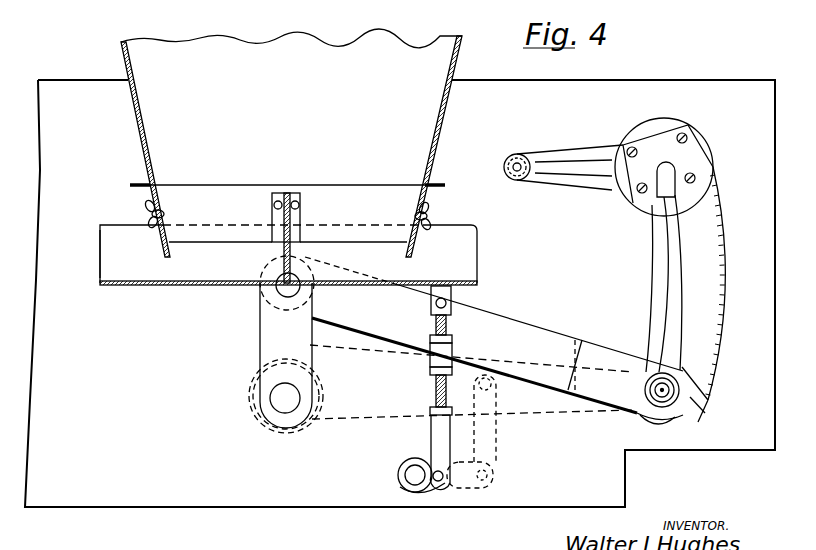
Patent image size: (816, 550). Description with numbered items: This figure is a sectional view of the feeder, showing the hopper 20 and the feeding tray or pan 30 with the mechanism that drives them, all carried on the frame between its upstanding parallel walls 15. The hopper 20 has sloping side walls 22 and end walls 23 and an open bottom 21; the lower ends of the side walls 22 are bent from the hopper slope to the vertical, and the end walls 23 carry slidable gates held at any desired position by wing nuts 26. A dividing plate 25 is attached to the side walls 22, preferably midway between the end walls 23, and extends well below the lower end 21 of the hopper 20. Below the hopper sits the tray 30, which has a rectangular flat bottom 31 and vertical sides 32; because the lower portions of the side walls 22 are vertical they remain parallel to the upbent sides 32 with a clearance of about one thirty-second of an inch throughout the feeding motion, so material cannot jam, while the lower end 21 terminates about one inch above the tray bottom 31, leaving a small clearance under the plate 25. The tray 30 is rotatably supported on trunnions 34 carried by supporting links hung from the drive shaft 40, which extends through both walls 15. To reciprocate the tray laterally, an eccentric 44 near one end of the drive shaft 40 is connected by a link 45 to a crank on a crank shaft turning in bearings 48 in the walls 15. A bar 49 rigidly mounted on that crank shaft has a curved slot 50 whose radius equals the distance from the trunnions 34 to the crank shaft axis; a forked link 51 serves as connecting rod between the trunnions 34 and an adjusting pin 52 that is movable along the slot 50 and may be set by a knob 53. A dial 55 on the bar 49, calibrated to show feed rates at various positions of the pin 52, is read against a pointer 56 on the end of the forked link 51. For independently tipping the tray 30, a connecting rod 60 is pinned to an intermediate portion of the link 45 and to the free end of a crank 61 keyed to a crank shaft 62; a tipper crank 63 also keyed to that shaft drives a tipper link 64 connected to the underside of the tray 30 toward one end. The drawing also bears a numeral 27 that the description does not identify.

The upstanding parallel walls 15 is at (145, 508).
The hopper 20 is at (302, 143).
The open bottom 21 is at (188, 245).
The side walls 22 is at (410, 186).
The end walls 23 is at (441, 140).
The dividing plate 25 is at (290, 193).
The wing nuts 26 is at (432, 214).
The rod 27 is at (446, 190).
The feeding tray 30 is at (287, 273).
The flat bottom 31 is at (136, 287).
The vertical sides 32 is at (100, 248).
The trunnions 34 is at (277, 287).
The drive shaft 40 is at (283, 398).
The eccentric 44 is at (250, 375).
The link 45 is at (343, 420).
The bearings 48 is at (623, 136).
The bar 49 is at (728, 291).
The slot 50 is at (672, 269).
The forked link 51 is at (494, 323).
The adjusting pin 52 is at (647, 388).
The knob 53 is at (680, 385).
The dial 55 is at (718, 212).
The pointer 56 is at (694, 396).
The connecting rod 60 is at (477, 410).
The crank 61 is at (446, 490).
The crank shaft 62 is at (405, 489).
The tipper crank 63 is at (410, 493).
The tipper link 64 is at (452, 444).